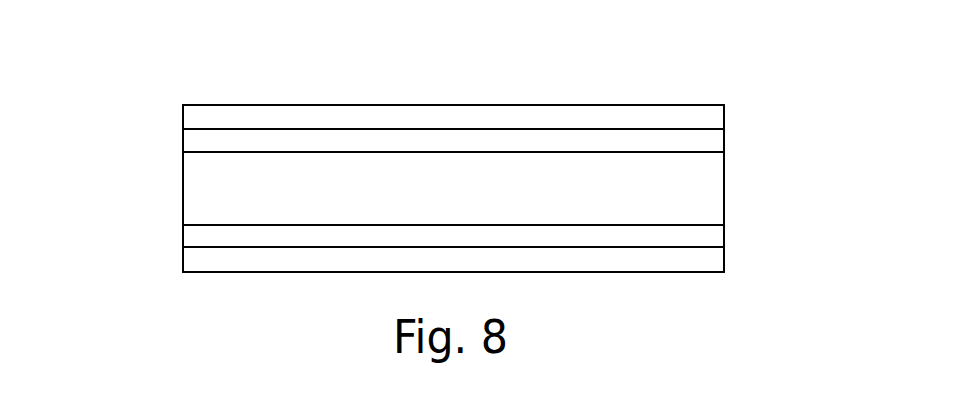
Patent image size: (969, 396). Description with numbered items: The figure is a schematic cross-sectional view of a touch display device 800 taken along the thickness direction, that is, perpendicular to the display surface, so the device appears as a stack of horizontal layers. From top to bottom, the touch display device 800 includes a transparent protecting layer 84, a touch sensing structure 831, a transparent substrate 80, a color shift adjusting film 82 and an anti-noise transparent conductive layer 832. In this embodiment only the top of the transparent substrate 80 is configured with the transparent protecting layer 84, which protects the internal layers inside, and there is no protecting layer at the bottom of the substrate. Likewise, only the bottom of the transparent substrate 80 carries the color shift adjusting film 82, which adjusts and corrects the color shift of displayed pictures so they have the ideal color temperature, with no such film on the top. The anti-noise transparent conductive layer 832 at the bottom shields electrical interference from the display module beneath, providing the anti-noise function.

The touch display device 800 is at (641, 73).
The transparent protecting layer 84 is at (707, 118).
The touch sensing structure 831 is at (193, 142).
The transparent substrate 80 is at (702, 187).
The color shift adjusting film 82 is at (197, 237).
The anti-noise transparent conductive layer 832 is at (708, 260).